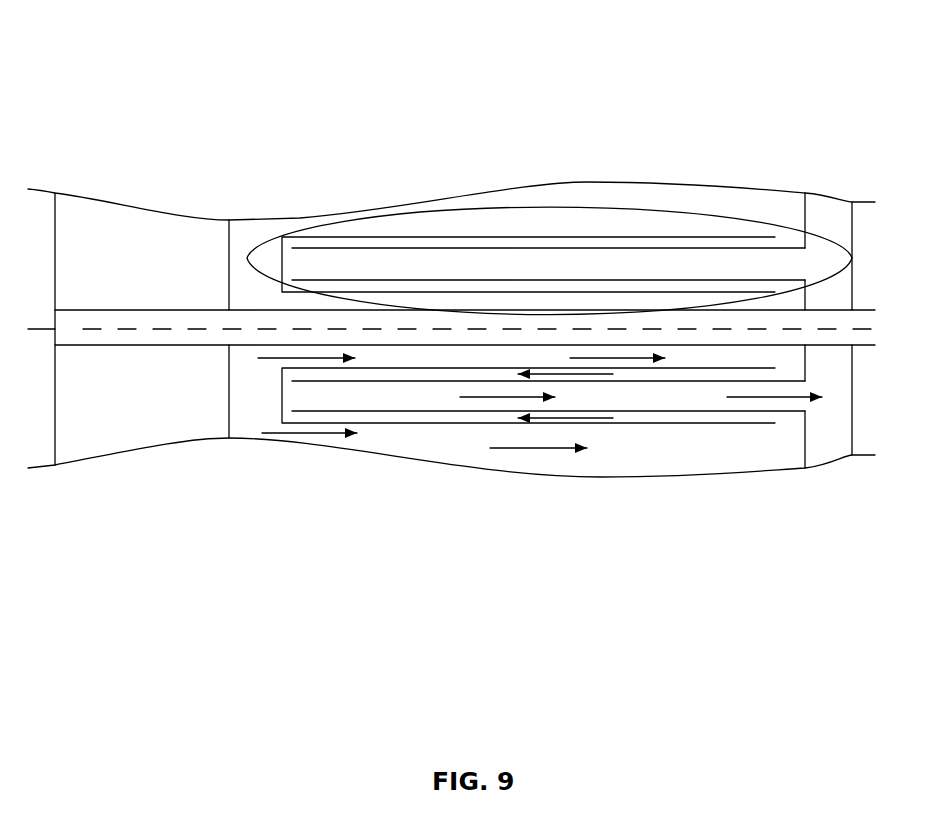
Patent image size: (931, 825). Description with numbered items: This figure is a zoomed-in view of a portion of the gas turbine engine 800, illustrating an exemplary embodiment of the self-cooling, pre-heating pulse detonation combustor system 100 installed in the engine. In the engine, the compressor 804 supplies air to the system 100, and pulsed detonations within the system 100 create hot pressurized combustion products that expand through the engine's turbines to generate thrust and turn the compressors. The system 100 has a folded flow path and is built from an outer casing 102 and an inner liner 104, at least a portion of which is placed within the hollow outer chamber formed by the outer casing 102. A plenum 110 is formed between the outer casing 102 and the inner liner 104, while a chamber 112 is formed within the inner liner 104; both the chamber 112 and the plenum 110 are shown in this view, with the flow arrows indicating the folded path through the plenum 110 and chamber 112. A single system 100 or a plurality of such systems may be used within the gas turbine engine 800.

The gas turbine engine 800 is at (435, 77).
The compressor 804 is at (148, 230).
The self-cooling, pre-heating pulse detonation combustor system 100 is at (642, 208).
The plenum 110 is at (448, 242).
The chamber 112 is at (557, 265).
The inner liner 104 is at (422, 411).
The outer casing 102 is at (468, 423).